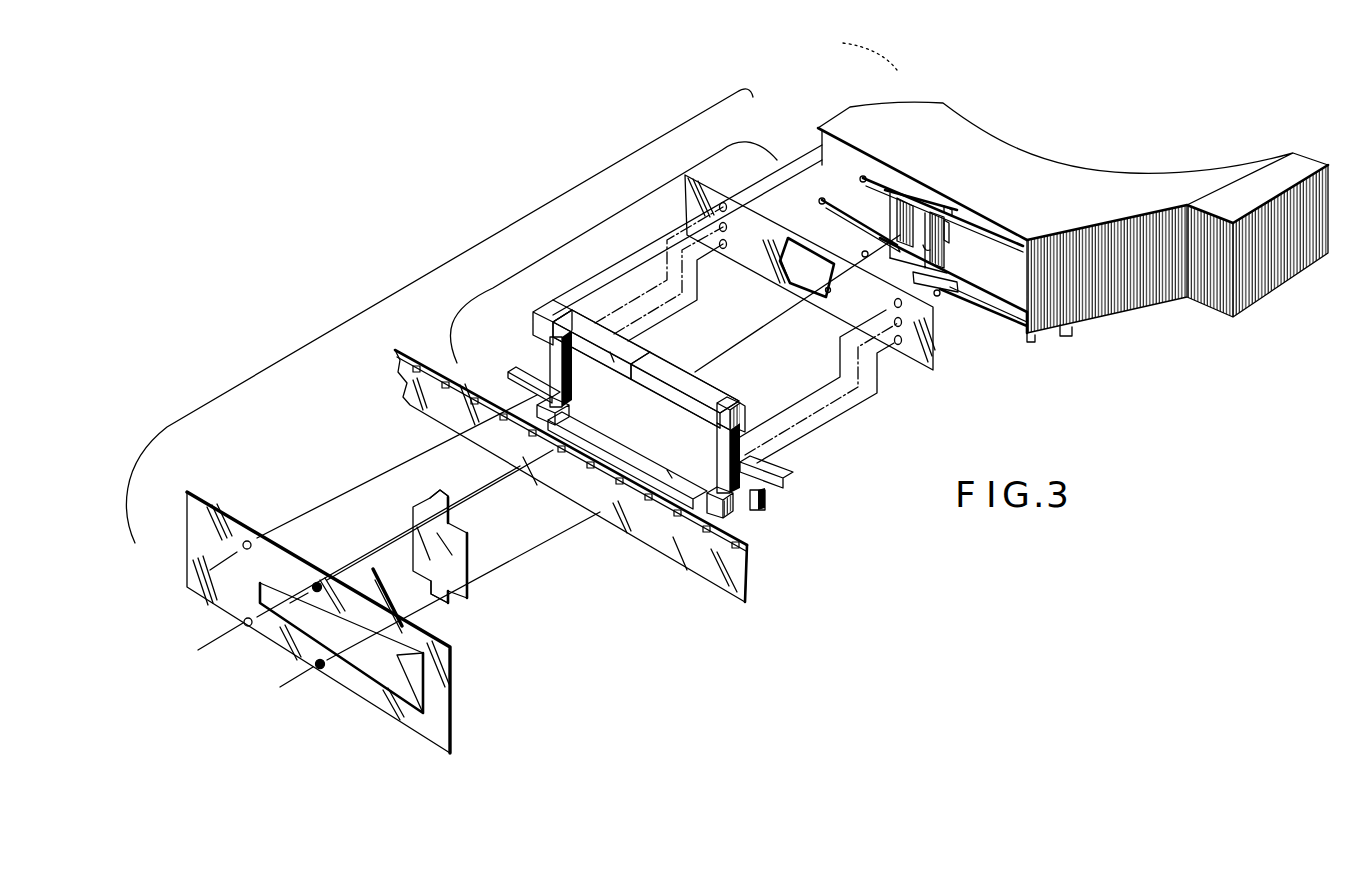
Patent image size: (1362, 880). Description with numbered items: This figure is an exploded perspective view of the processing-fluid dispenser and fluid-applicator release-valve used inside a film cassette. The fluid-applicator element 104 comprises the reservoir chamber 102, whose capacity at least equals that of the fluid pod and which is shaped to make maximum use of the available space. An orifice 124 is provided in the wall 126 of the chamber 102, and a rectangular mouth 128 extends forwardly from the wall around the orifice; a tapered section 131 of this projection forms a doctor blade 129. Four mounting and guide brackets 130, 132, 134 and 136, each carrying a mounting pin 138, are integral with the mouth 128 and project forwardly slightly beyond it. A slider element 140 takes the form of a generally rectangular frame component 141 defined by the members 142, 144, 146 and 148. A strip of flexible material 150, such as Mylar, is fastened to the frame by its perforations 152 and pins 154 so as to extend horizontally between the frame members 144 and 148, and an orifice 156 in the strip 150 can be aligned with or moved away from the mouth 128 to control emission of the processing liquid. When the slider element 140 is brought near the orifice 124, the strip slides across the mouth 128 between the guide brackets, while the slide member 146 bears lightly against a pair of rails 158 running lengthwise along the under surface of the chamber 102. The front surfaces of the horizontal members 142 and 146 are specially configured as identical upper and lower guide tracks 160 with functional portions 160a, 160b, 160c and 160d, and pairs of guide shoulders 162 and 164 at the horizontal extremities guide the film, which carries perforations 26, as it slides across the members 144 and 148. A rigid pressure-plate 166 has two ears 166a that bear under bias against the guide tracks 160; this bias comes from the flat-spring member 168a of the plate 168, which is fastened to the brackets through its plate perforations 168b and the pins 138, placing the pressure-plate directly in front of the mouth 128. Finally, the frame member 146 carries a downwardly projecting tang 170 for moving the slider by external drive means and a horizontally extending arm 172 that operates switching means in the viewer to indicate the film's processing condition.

The perforations 26 is at (708, 532).
The reservoir chamber 102 is at (1098, 182).
The fluid-applicator element 104 is at (506, 229).
The orifice 124 is at (893, 212).
The wall 126 is at (983, 277).
The mouth 128 is at (827, 222).
The doctor blade 129 is at (952, 210).
The mounting and guide bracket 130 is at (887, 174).
The tapered section 131 is at (934, 251).
The mounting and guide bracket 132 is at (940, 207).
The mounting and guide bracket 134 is at (836, 254).
The mounting and guide bracket 136 is at (947, 297).
The mounting pin 138 is at (947, 220).
The slider element 140 is at (608, 225).
The frame component 141 is at (659, 361).
The frame member 142 is at (714, 395).
The frame member 144 is at (719, 470).
The frame member 146 is at (770, 464).
The frame member 148 is at (551, 353).
The strip of flexible material 150 is at (745, 196).
The perforations 152 is at (899, 347).
The pins 154 is at (744, 428).
The orifice 156 is at (830, 291).
The rails 158 is at (1030, 342).
The guide tracks 160 is at (638, 377).
The functional portion of guide track 160a is at (690, 398).
The functional portion of guide track 160b is at (662, 380).
The functional portion of guide track 160c is at (638, 368).
The functional portion of guide track 160d is at (573, 328).
The guide shoulders 162 is at (533, 325).
The guide shoulders 164 is at (717, 457).
The pressure-plate 166 is at (468, 537).
The ears 166a is at (450, 513).
The plate 168 is at (453, 688).
The flat-spring member 168a is at (358, 598).
The plate perforations 168b is at (248, 549).
The tang 170 is at (766, 503).
The arm 172 is at (508, 374).